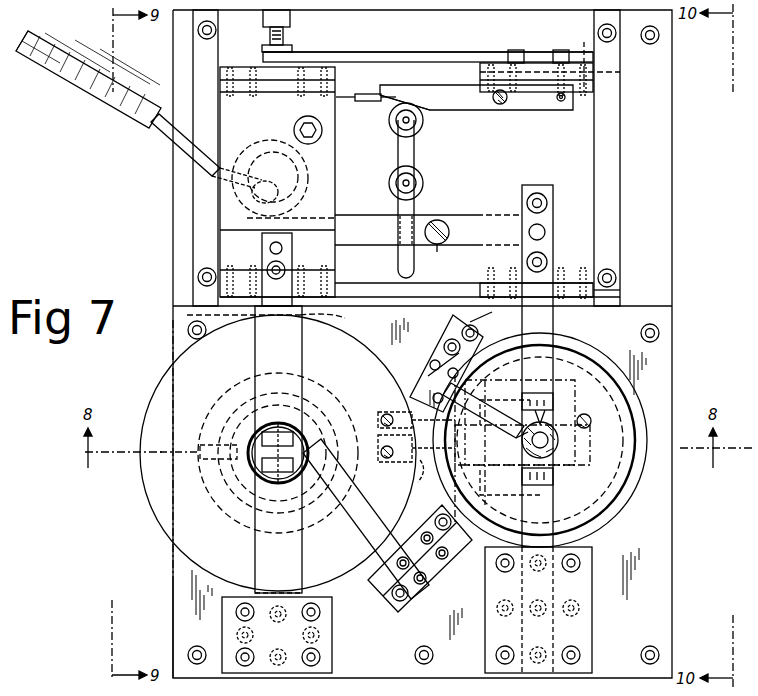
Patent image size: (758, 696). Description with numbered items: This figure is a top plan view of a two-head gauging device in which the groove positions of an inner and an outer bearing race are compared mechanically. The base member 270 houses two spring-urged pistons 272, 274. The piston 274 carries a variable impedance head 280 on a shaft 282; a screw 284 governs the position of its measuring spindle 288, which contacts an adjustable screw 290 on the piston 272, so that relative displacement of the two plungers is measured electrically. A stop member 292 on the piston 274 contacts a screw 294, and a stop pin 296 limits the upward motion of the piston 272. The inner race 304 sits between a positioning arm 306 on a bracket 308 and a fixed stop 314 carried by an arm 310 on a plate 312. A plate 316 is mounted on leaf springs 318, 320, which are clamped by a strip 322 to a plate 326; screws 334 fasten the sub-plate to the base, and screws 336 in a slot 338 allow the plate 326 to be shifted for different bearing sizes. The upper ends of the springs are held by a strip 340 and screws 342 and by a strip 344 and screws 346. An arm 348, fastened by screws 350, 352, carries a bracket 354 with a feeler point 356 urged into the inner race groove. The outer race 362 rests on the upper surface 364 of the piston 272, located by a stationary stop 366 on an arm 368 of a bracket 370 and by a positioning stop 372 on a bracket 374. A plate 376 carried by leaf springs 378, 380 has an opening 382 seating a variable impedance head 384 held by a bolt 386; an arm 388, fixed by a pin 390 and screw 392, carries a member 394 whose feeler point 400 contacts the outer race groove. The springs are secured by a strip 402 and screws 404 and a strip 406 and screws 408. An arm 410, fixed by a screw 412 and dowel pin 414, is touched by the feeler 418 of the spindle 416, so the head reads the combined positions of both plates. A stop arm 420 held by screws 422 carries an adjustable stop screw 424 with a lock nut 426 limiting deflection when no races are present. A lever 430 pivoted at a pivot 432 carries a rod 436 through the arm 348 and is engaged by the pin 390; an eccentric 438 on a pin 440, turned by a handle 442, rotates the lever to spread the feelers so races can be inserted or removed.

The base member 270 is at (678, 182).
The piston 272 is at (157, 522).
The piston 274 is at (618, 502).
The variable impedance head 280 is at (640, 475).
The shaft 282 is at (486, 462).
The screw 284 is at (590, 430).
The measuring spindle 288 is at (452, 402).
The adjustable screw 290 is at (390, 420).
The stop member 292 is at (428, 470).
The screw 294 is at (386, 462).
The stop pin 296 is at (198, 450).
The inner race 304 is at (558, 438).
The positioning arm 306 is at (475, 330).
The bracket 308 is at (440, 345).
The arm 310 is at (572, 535).
The plate 312 is at (592, 630).
The fixed stop 314 is at (553, 477).
The plate 316 is at (614, 158).
The leaf spring 318 is at (620, 73).
The leaf spring 320 is at (620, 292).
The strip 322 is at (368, 58).
The plate 326 is at (380, 292).
The screws 334 is at (197, 277).
The screws 336 is at (422, 122).
The slot 338 is at (414, 158).
The strip 340 is at (530, 68).
The screws 342 is at (584, 52).
The strip 344 is at (480, 285).
The screws 346 is at (500, 300).
The arm 348 is at (572, 340).
The screw 350 is at (548, 203).
The screw 352 is at (547, 260).
The bracket 354 is at (553, 400).
The feeler point 356 is at (542, 414).
The outer race 362 is at (248, 485).
The upper surface 364 is at (185, 546).
The stationary stop 366 is at (308, 428).
The arm 368 is at (302, 575).
The bracket 370 is at (332, 640).
The positioning stop 372 is at (368, 523).
The bracket 374 is at (440, 585).
The plate 376 is at (345, 230).
The leaf spring 378 is at (222, 72).
The leaf spring 380 is at (340, 258).
The opening 382 is at (312, 172).
The variable impedance head 384 is at (336, 194).
The bolt 386 is at (322, 130).
The arm 388 is at (300, 353).
The pin 390 is at (268, 249).
The screw 392 is at (287, 251).
The member 394 is at (242, 415).
The movable feeler point 400 is at (278, 422).
The strip 402 is at (230, 67).
The screws 404 is at (232, 45).
The strip 406 is at (240, 312).
The screws 408 is at (335, 290).
The arm 410 is at (505, 112).
The screw 412 is at (504, 104).
The dowel pin 414 is at (561, 103).
The spindle 416 is at (372, 93).
The feeler 418 is at (420, 92).
The stop arm 420 is at (418, 52).
The screws 422 is at (512, 48).
The adjustable stop screw 424 is at (288, 36).
The lock nut 426 is at (292, 49).
The lever 430 is at (423, 222).
The pivot 432 is at (440, 245).
The rod 436 is at (545, 232).
The eccentric 438 is at (280, 200).
The pin 440 is at (272, 160).
The handle 442 is at (125, 122).